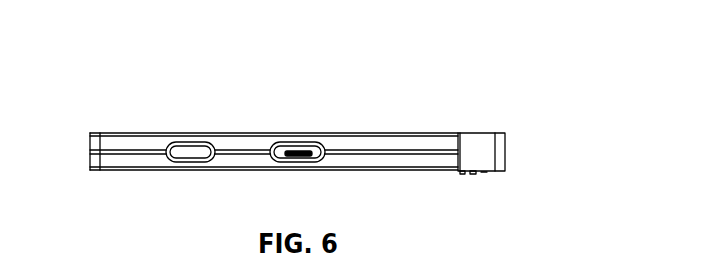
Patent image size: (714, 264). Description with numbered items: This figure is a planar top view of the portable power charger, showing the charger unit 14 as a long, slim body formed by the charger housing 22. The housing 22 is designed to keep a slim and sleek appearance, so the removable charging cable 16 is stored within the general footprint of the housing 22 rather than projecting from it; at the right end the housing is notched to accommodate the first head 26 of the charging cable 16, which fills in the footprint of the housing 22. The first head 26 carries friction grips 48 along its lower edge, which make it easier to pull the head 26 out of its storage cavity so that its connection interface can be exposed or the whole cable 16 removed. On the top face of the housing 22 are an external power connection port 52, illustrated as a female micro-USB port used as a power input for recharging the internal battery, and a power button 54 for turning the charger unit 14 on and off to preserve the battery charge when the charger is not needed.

The charger unit 14 is at (122, 96).
The charger housing 22 is at (115, 163).
The power button 54 is at (192, 141).
The external power connection port 52 is at (297, 141).
The first head 26 is at (478, 145).
The charging cable 16 is at (518, 148).
The friction grips 48 is at (480, 182).